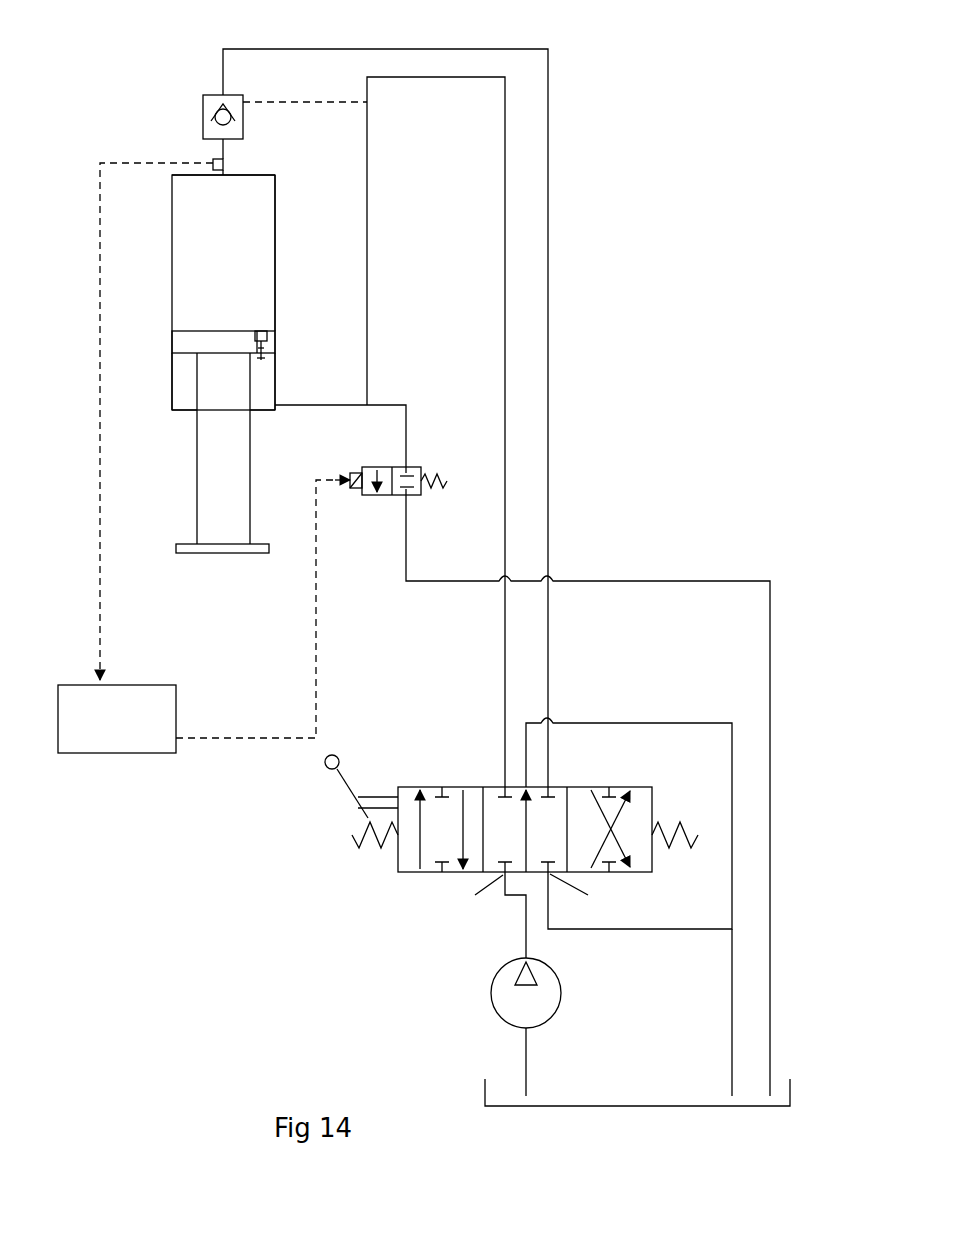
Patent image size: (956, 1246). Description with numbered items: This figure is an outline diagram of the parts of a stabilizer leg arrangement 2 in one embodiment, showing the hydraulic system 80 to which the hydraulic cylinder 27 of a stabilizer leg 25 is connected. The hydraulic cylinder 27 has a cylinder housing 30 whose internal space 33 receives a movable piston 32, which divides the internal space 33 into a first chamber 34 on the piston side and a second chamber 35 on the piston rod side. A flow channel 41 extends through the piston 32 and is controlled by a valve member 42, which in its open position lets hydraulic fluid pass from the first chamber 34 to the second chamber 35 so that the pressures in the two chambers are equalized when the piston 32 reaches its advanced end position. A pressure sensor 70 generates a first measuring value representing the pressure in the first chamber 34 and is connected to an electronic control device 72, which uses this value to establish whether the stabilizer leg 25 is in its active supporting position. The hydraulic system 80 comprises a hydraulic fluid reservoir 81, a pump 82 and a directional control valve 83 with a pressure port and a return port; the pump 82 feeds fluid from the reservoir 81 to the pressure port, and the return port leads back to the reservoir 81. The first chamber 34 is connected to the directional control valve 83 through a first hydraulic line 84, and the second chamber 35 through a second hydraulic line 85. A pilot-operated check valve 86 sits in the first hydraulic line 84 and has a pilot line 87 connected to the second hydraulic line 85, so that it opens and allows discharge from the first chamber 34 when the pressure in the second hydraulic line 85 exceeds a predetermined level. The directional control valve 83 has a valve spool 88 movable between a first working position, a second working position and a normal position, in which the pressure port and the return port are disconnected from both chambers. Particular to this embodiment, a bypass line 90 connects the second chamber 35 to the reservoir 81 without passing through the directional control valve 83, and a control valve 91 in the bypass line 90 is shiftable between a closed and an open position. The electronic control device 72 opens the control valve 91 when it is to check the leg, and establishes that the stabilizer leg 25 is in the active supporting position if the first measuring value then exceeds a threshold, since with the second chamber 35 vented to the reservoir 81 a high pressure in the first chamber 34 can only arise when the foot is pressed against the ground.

The stabilizer leg arrangement 2 is at (130, 78).
The stabilizer leg 25 is at (287, 170).
The hydraulic cylinder 27 is at (290, 215).
The cylinder housing 30 is at (171, 290).
The piston 32 is at (172, 346).
The internal space 33 is at (187, 240).
The first chamber 34 is at (257, 268).
The second chamber 35 is at (268, 389).
The flow channel 41 is at (270, 346).
The valve member 42 is at (259, 330).
The pressure sensor 70 is at (225, 163).
The electronic control device 72 is at (88, 748).
The hydraulic system 80 is at (242, 900).
The hydraulic fluid reservoir 81 is at (781, 1083).
The pump 82 is at (502, 1003).
The directional control valve 83 is at (397, 899).
The first hydraulic line 84 is at (550, 205).
The second hydraulic line 85 is at (505, 205).
The pilot-operated check valve 86 is at (207, 95).
The pilot line 87 is at (283, 102).
The valve spool 88 is at (580, 787).
The bypass line 90 is at (408, 444).
The control valve 91 is at (373, 498).